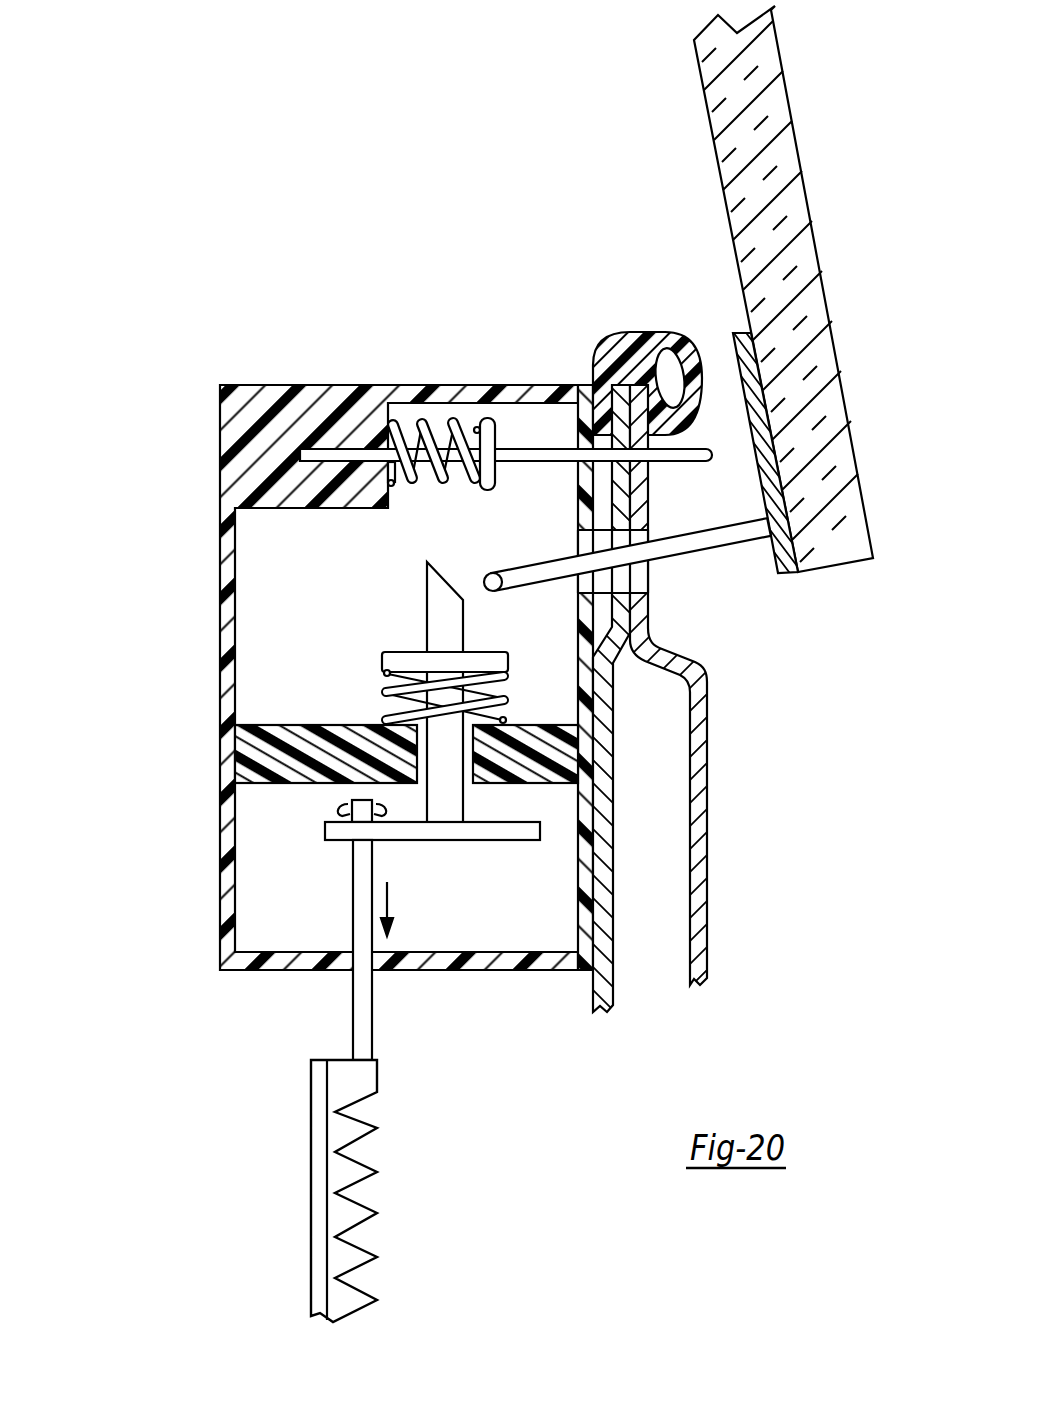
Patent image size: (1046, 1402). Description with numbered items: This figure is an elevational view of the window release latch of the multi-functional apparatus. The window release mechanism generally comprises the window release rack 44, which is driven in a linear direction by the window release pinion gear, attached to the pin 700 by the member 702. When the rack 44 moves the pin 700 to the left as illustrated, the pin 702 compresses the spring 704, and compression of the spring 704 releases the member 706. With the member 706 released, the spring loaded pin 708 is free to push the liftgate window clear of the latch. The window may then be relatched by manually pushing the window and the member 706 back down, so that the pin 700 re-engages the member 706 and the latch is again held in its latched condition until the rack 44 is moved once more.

The spring loaded pin 708 is at (525, 457).
The pin 700 is at (433, 601).
The spring 704 is at (386, 692).
The member 702 is at (357, 922).
The member 706 is at (718, 542).
The window release rack 44 is at (330, 1147).